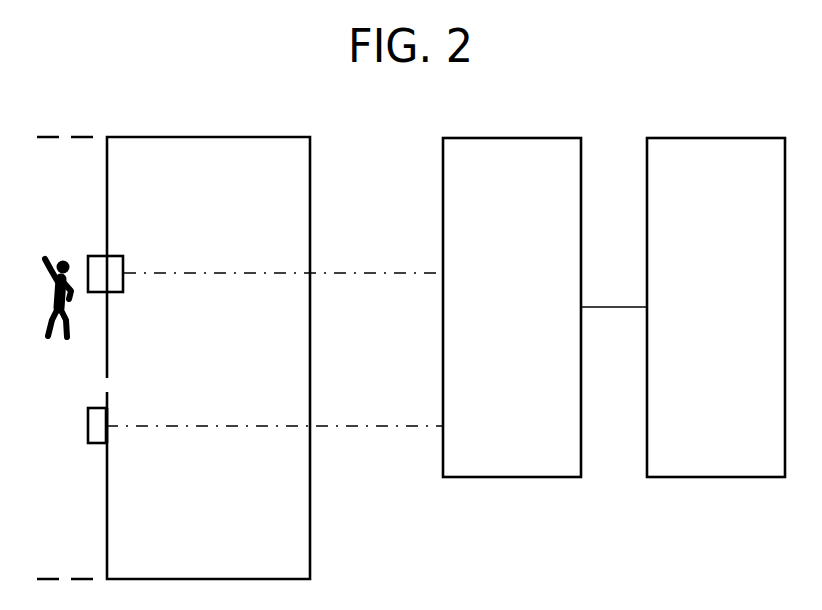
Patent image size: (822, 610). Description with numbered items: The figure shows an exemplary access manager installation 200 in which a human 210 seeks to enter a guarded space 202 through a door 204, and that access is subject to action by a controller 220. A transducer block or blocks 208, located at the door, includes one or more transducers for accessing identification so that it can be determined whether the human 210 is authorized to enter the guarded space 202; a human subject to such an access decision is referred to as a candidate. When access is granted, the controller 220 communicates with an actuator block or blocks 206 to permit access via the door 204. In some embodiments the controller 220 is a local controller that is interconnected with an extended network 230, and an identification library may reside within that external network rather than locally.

The access manager installation 200 is at (614, 101).
The guarded space 202 is at (138, 137).
The door 204 is at (107, 348).
The actuator block 206 is at (113, 255).
The transducer block 208 is at (88, 428).
The human 210 is at (68, 342).
The controller 220 is at (512, 137).
The extended network 230 is at (733, 137).